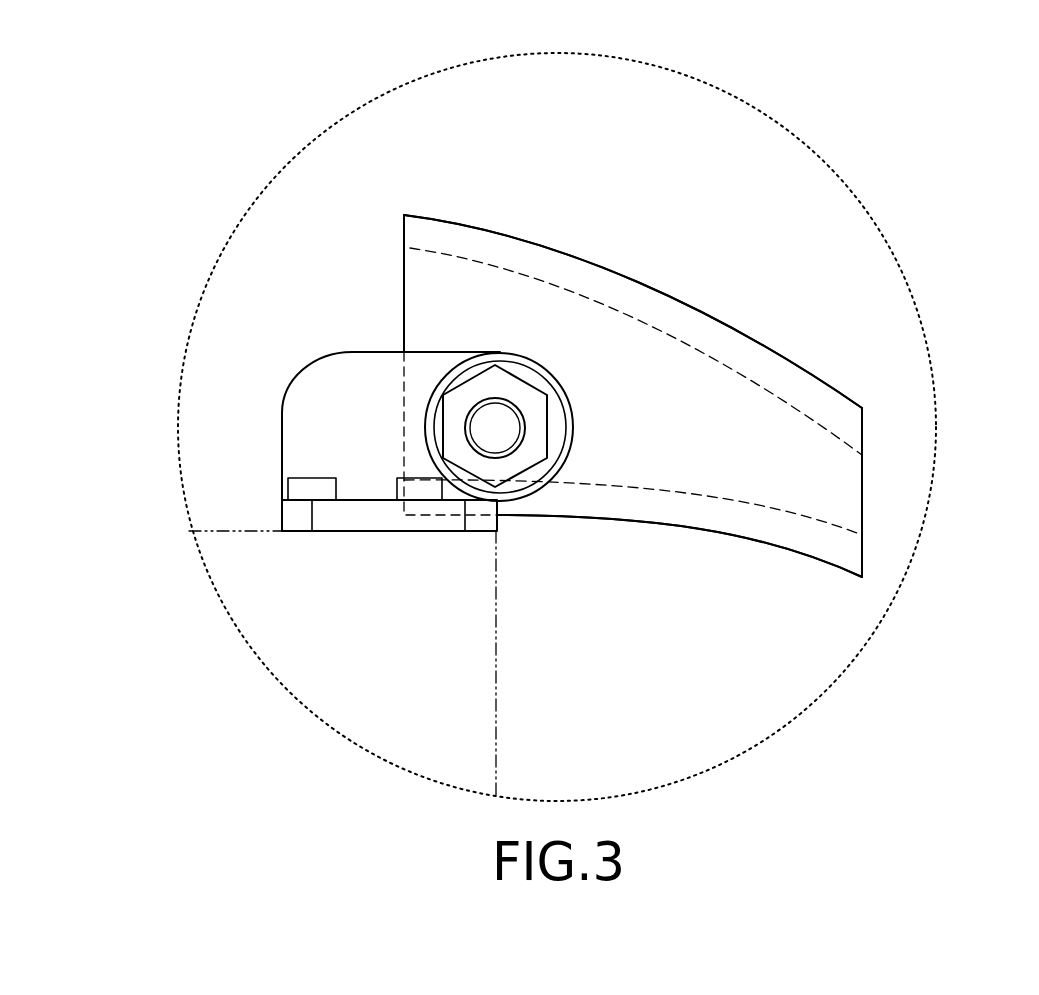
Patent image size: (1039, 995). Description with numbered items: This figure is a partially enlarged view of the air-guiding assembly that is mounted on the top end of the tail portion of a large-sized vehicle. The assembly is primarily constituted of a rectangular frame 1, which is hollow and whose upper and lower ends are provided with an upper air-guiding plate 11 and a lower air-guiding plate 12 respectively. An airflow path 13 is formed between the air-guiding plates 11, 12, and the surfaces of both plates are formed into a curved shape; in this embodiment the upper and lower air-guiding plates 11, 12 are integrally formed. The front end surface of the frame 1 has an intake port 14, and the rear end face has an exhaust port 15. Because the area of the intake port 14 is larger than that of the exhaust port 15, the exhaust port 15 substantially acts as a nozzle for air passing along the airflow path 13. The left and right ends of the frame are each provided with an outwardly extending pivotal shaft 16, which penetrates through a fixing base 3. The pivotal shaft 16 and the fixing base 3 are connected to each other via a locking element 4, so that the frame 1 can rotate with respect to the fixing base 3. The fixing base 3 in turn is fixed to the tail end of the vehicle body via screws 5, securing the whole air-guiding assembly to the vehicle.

The frame 1 is at (670, 262).
The fixing base 3 is at (310, 405).
The locking element 4 is at (416, 397).
The screws 5 is at (308, 483).
The air-guiding plate 11 is at (593, 273).
The air-guiding plate 12 is at (652, 508).
The airflow path 13 is at (683, 348).
The intake port 14 is at (413, 302).
The exhaust port 15 is at (847, 492).
The pivotal shaft 16 is at (495, 427).